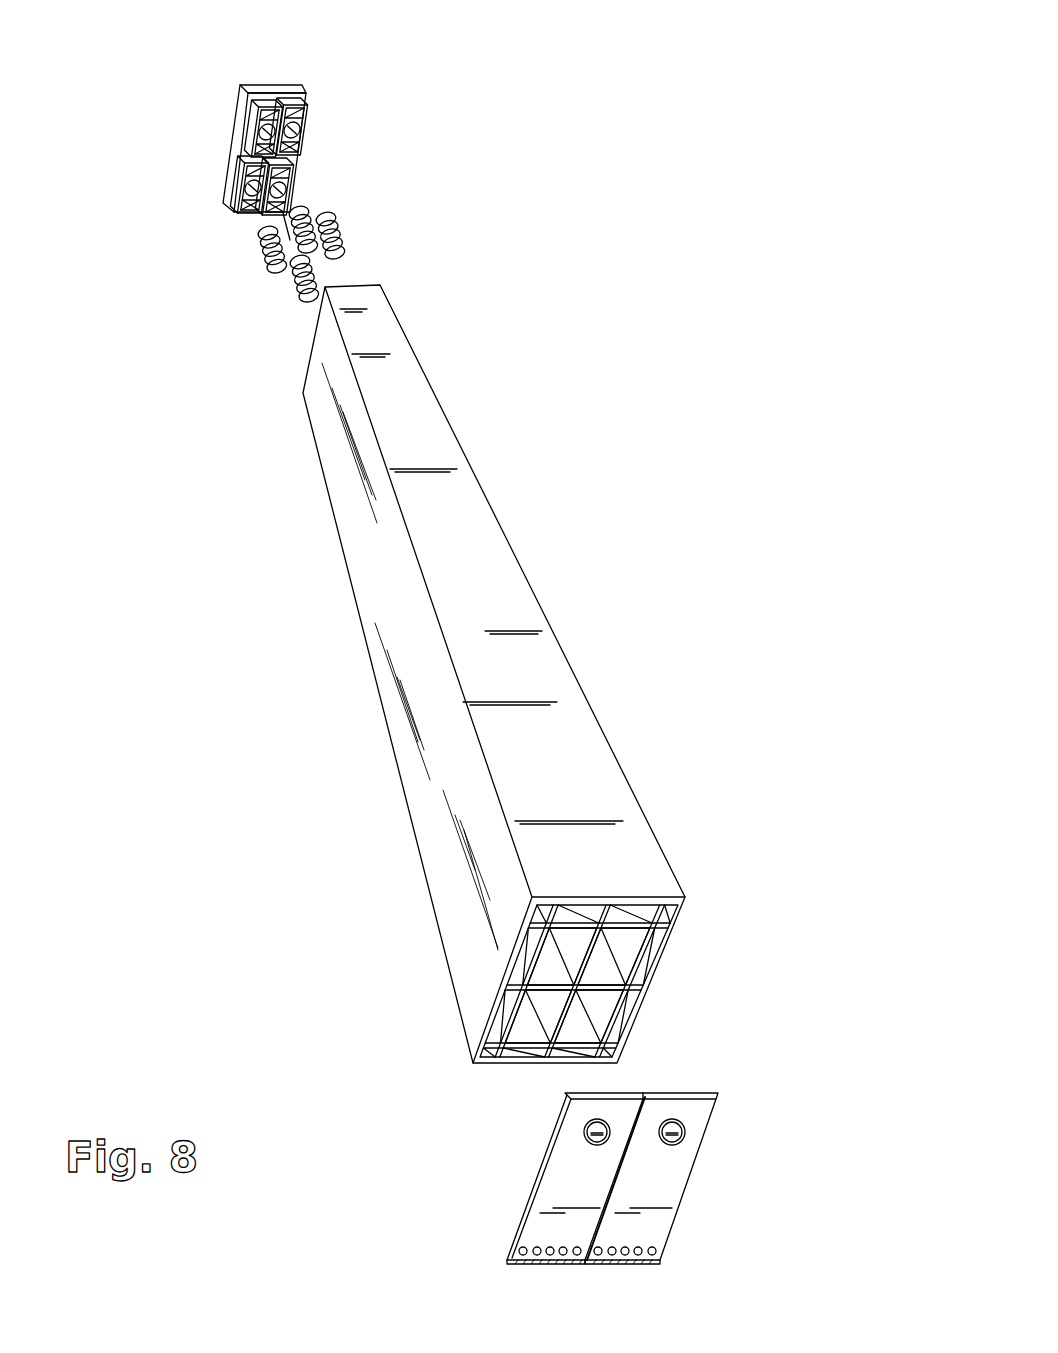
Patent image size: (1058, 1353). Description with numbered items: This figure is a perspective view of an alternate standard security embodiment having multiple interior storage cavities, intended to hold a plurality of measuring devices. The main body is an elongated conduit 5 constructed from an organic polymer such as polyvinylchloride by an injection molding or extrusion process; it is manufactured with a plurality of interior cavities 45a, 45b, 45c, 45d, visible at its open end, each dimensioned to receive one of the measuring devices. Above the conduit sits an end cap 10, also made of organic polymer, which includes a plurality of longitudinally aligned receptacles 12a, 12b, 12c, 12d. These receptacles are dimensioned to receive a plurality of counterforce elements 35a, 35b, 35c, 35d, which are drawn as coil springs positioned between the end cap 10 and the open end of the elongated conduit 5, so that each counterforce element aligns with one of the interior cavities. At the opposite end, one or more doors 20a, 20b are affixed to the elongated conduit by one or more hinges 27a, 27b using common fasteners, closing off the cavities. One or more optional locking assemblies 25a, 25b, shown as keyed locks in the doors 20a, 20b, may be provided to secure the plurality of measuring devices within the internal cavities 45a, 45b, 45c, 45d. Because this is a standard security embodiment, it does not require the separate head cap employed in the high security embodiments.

The elongated conduit 5 is at (477, 518).
The end cap 10 is at (272, 82).
The receptacle 12a is at (263, 102).
The receptacle 12b is at (293, 110).
The receptacle 12c is at (233, 163).
The receptacle 12d is at (313, 193).
The counterforce element 35a is at (257, 248).
The counterforce element 35b is at (313, 197).
The counterforce element 35c is at (292, 302).
The counterforce element 35d is at (343, 233).
The interior cavity 45a is at (563, 953).
The interior cavity 45b is at (617, 953).
The interior cavity 45c is at (522, 1020).
The interior cavity 45d is at (593, 1015).
The door 20a is at (553, 1202).
The door 20b is at (652, 1203).
The locking assembly 25a is at (583, 1132).
The locking assembly 25b is at (687, 1133).
The hinge 27a is at (537, 1262).
The hinge 27b is at (633, 1263).